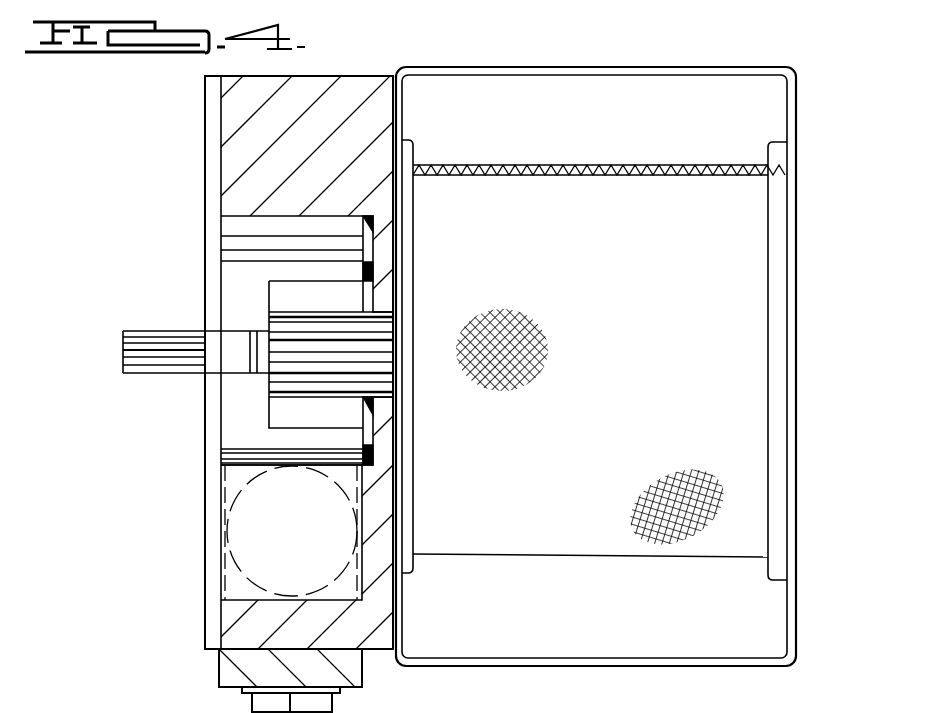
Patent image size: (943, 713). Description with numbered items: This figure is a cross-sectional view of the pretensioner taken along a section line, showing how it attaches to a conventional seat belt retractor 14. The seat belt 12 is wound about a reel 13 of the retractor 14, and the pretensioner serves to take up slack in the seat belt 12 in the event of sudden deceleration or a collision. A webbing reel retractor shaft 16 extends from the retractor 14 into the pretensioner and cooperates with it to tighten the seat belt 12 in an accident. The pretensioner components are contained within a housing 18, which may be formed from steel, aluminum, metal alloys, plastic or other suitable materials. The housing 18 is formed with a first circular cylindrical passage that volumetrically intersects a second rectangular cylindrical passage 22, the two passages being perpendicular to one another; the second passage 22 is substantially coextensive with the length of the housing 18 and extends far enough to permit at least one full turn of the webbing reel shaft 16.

The seat belt 12 is at (718, 265).
The reel 13 is at (775, 325).
The seat belt retractor 14 is at (689, 53).
The webbing reel retractor shaft 16 is at (268, 378).
The housing 18 is at (268, 172).
The second rectangular cylindrical passage 22 is at (262, 529).